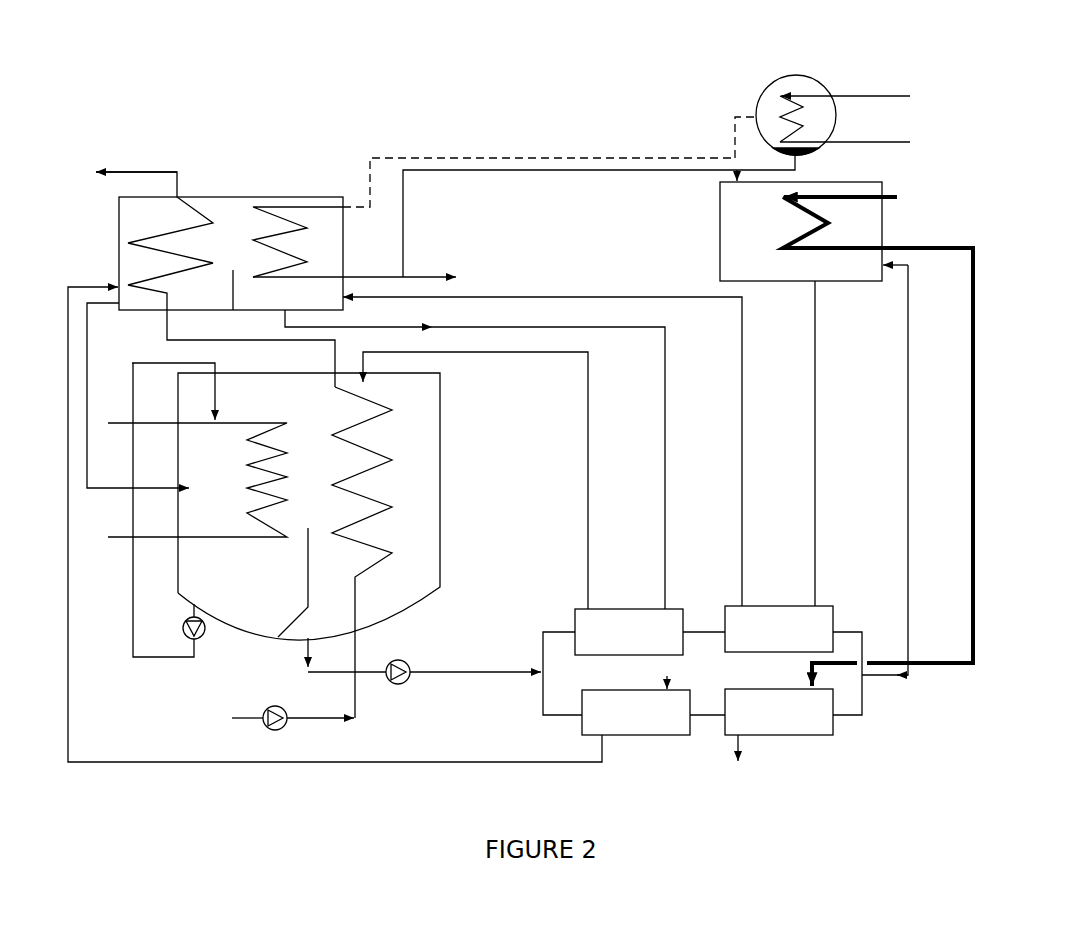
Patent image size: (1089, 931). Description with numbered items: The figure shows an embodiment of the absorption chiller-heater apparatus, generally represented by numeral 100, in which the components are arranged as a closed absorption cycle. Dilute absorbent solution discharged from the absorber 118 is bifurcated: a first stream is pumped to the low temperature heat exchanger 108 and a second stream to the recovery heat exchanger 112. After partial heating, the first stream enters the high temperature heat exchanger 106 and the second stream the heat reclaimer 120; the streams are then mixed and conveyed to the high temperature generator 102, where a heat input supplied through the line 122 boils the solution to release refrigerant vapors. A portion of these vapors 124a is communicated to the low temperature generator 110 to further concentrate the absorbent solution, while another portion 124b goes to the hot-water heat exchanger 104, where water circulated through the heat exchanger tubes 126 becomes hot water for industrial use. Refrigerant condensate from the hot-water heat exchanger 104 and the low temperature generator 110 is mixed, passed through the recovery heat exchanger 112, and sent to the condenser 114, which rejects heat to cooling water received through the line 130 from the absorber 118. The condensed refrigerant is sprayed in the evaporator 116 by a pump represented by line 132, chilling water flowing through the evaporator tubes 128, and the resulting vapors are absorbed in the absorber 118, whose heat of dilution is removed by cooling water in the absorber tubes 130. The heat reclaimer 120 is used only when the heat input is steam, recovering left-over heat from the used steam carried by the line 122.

The absorption chiller-heater apparatus embodiment 100 is at (989, 146).
The high temperature generator 102 is at (890, 207).
The hot-water heat exchanger 104 is at (816, 76).
The high temperature heat exchanger 106 is at (827, 603).
The low temperature heat exchanger 108 is at (570, 605).
The low temperature generator 110 is at (311, 195).
The recovery heat exchanger 112 is at (620, 768).
The condenser 114 is at (113, 262).
The evaporator 116 is at (255, 607).
The absorber 118 is at (403, 573).
The heat reclaimer 120 is at (842, 733).
The heat input 122 is at (930, 243).
The portion of refrigerant vapors 124a is at (521, 156).
The portion of refrigerant vapors 124b is at (729, 133).
The heat exchanger tubes 126 is at (877, 88).
The evaporator tubes 128 is at (111, 420).
The absorber tubes 130 is at (314, 725).
The refrigerant spray pump line 132 is at (125, 626).